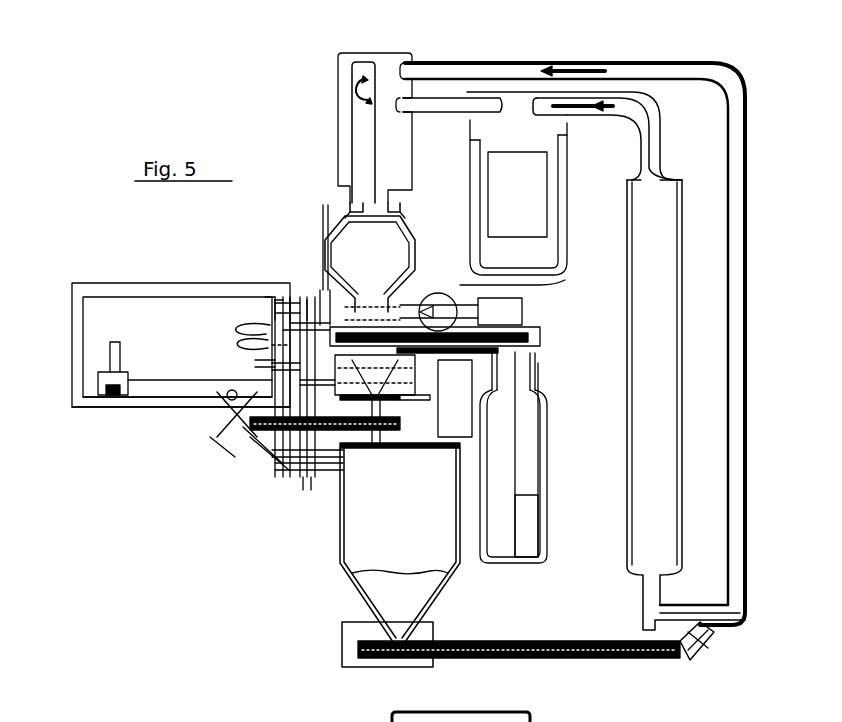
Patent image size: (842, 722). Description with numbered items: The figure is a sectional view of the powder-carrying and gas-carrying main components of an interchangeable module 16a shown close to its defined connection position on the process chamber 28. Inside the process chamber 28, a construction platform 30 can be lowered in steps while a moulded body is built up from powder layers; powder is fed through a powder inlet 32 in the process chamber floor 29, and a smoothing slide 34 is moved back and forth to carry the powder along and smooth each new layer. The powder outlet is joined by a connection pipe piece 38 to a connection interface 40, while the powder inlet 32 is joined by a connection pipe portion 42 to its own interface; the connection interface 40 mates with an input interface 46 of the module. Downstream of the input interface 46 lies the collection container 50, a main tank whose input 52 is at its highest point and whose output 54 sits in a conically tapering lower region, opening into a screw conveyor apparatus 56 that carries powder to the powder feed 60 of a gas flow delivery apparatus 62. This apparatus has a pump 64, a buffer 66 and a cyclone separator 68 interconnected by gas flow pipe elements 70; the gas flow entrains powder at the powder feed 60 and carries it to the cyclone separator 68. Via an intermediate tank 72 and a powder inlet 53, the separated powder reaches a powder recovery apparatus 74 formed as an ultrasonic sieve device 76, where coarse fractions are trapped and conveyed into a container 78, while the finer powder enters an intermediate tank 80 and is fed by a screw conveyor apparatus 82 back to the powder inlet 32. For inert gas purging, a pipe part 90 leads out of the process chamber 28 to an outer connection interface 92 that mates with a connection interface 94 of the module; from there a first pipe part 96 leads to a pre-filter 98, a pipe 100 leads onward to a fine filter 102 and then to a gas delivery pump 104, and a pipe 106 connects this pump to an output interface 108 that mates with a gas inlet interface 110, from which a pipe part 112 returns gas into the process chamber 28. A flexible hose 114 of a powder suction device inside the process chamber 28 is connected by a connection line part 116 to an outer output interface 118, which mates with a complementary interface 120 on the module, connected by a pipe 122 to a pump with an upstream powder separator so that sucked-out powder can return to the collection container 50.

The interchangeable module 16a is at (692, 673).
The process chamber 28 is at (100, 302).
The process chamber floor 29 is at (188, 403).
The construction platform 30 is at (137, 403).
The powder inlet 32 is at (240, 385).
The smoothing slide 34 is at (93, 375).
The connection pipe piece 38 is at (255, 457).
The connection interface 40 is at (293, 472).
The connection pipe portion 42 is at (220, 418).
The input interface 46 is at (308, 480).
The collection container 50 is at (343, 560).
The input of the collection container 52 is at (342, 465).
The powder inlet 53 is at (405, 285).
The output of the collection container 54 is at (398, 628).
The screw conveyor apparatus 56 is at (567, 657).
The powder feed 60 is at (700, 640).
The gas flow delivery apparatus 62 is at (753, 305).
The pump 64 is at (553, 204).
The buffer 66 is at (638, 410).
The cyclone separator 68 is at (369, 205).
The gas flow pipe elements 70 is at (473, 108).
The intermediate tank 72 is at (396, 216).
The powder recovery apparatus 74 is at (550, 333).
The ultrasonic sieve device 76 is at (548, 290).
The container 78 is at (527, 477).
The intermediate tank 80 is at (398, 447).
The screw conveyor apparatus 82 is at (340, 443).
The pipe part 90 is at (232, 412).
The outer connection interface 92 is at (236, 358).
The connection interface 94 is at (262, 358).
The first pipe part 96 is at (427, 373).
The pre-filter 98 is at (457, 398).
The pipe 100 is at (500, 350).
The control unit 102 is at (503, 307).
The gas delivery pump 104 is at (442, 302).
The pipe 106 is at (350, 225).
The output interface 108 is at (310, 297).
The gas inlet interface 110 is at (290, 297).
The pipe part 112 is at (277, 300).
The flexible hose 114 is at (270, 300).
The connection line part 116 is at (265, 330).
The outer output interface 118 is at (270, 310).
The complementary interface 120 is at (340, 230).
The pipe 122 is at (342, 452).